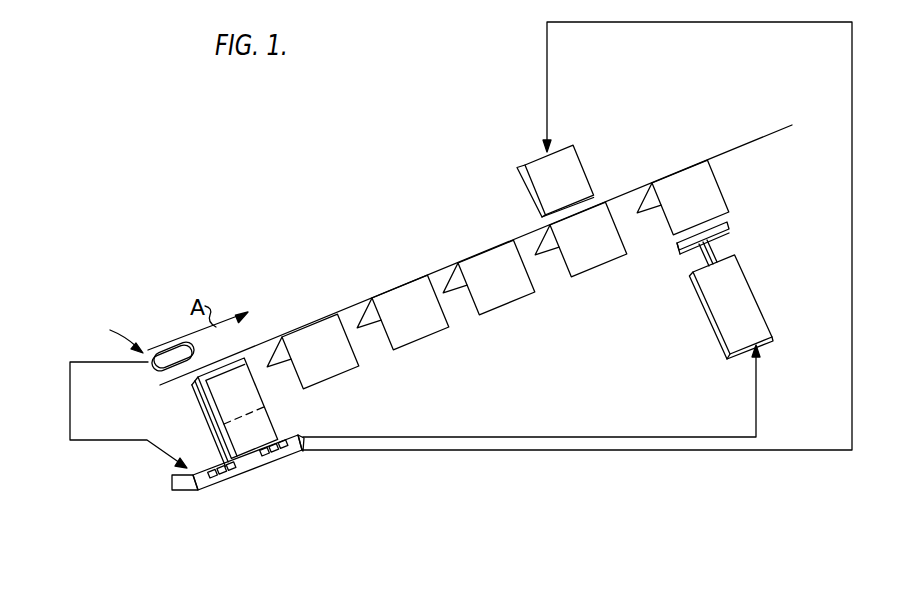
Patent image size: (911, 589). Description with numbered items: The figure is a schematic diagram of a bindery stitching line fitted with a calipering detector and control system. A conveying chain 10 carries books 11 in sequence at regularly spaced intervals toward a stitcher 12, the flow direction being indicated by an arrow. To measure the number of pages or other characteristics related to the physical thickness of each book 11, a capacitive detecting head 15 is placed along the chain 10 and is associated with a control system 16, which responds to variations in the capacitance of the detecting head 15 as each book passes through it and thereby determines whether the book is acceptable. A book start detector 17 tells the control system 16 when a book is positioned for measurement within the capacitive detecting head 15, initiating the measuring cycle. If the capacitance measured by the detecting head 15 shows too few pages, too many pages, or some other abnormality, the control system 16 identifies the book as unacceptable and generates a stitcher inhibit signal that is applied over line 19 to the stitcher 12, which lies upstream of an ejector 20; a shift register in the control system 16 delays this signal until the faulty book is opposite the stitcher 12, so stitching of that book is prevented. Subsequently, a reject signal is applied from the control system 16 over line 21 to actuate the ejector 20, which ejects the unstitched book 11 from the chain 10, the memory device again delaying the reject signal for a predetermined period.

The conveying chain 10 is at (772, 137).
The books 11 is at (327, 367).
The stitcher 12 is at (582, 167).
The capacitive detecting head 15 is at (257, 427).
The control system 16 is at (250, 465).
The book start detector 17 is at (182, 353).
The line 19 is at (508, 452).
The ejector 20 is at (743, 300).
The line 21 is at (508, 435).